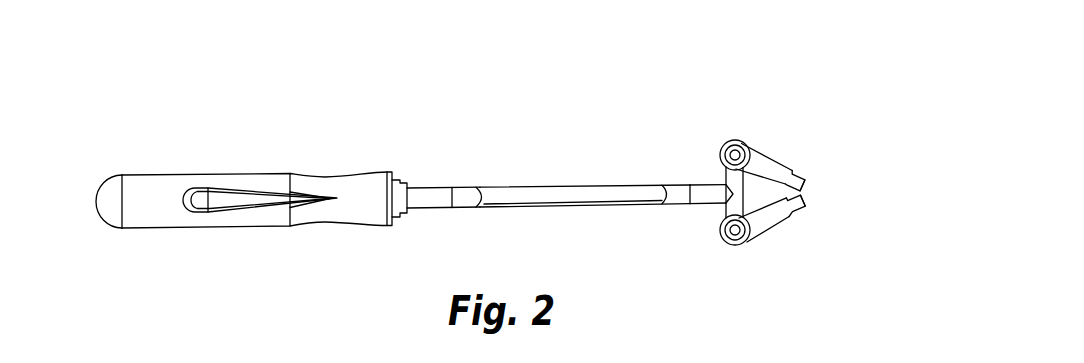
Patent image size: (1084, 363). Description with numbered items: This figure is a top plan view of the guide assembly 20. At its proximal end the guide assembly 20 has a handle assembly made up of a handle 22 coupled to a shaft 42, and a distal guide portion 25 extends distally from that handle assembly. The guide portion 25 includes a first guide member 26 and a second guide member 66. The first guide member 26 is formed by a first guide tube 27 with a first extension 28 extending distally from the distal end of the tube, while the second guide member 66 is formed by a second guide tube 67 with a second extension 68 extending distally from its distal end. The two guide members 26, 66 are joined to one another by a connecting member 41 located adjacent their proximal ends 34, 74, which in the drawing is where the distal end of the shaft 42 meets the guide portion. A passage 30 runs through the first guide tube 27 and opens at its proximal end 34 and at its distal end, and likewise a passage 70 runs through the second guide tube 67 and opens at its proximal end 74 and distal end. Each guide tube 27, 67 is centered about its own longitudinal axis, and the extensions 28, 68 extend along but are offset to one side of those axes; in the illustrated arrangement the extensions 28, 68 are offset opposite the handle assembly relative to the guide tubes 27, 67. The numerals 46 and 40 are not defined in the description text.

The guide assembly 20 is at (625, 101).
The handle 22 is at (318, 175).
The proximal shaft portion 46 is at (433, 185).
The shaft 42 is at (543, 185).
The head mount 40 is at (704, 183).
The connecting member 41 is at (723, 208).
The proximal end of first guide tube 34 is at (727, 144).
The passage 30 is at (737, 151).
The first guide member 26 is at (758, 147).
The first guide tube 27 is at (773, 158).
The first extension 28 is at (795, 171).
The distal guide portion 25 is at (805, 188).
The second guide member 66 is at (765, 232).
The second guide tube 67 is at (785, 221).
The second extension 68 is at (803, 208).
The proximal end of second guide tube 74 is at (742, 246).
The passage 70 is at (735, 237).